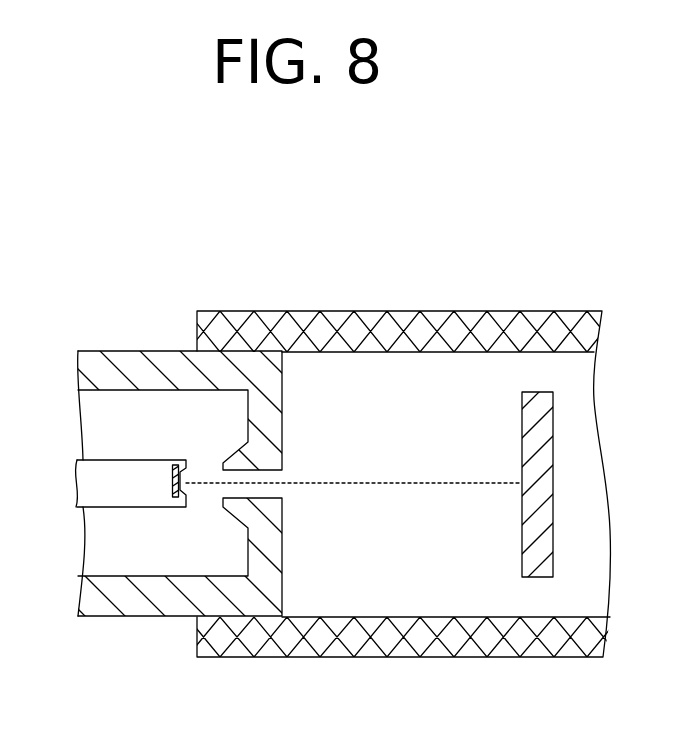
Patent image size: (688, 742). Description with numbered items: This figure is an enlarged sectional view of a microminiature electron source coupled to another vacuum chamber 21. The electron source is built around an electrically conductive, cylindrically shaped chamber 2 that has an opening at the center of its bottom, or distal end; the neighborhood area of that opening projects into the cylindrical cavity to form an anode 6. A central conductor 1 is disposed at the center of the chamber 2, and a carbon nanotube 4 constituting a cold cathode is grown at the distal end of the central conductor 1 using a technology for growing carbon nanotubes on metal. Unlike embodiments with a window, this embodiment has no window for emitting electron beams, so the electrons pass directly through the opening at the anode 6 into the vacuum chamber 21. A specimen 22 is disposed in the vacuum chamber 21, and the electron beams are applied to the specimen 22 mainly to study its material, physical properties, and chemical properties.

The central conductor 1 is at (97, 458).
The chamber 2 is at (123, 355).
The carbon nanotube 4 is at (171, 492).
The anode 6 is at (233, 454).
The vacuum chamber 21 is at (455, 328).
The specimen 22 is at (533, 544).